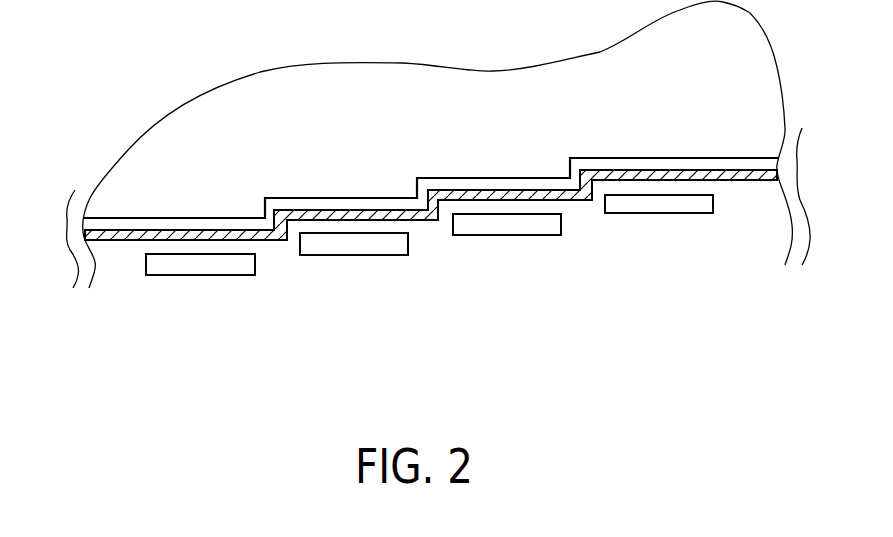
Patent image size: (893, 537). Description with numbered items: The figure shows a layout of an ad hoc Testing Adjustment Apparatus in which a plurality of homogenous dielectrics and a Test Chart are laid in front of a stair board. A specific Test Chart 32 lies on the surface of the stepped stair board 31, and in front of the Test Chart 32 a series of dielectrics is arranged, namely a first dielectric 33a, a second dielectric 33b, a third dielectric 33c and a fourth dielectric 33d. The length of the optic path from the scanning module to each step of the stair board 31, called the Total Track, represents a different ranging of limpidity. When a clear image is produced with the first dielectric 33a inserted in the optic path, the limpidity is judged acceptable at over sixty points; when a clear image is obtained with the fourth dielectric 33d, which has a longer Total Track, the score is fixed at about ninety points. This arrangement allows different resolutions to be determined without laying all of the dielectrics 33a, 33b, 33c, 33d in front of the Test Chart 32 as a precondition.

The stair board 31 is at (187, 125).
The Test Chart 32 is at (743, 181).
The first dielectric 33a is at (183, 276).
The second dielectric 33b is at (332, 256).
The third dielectric 33c is at (485, 236).
The fourth dielectric 33d is at (635, 214).